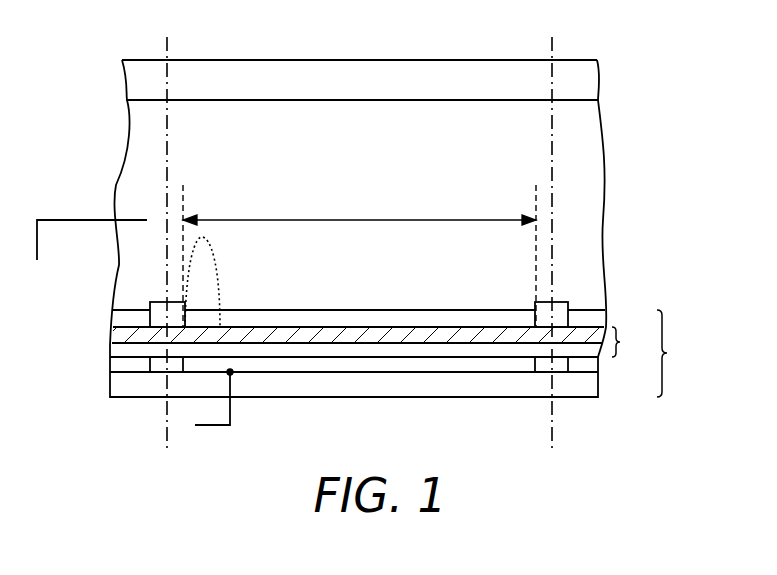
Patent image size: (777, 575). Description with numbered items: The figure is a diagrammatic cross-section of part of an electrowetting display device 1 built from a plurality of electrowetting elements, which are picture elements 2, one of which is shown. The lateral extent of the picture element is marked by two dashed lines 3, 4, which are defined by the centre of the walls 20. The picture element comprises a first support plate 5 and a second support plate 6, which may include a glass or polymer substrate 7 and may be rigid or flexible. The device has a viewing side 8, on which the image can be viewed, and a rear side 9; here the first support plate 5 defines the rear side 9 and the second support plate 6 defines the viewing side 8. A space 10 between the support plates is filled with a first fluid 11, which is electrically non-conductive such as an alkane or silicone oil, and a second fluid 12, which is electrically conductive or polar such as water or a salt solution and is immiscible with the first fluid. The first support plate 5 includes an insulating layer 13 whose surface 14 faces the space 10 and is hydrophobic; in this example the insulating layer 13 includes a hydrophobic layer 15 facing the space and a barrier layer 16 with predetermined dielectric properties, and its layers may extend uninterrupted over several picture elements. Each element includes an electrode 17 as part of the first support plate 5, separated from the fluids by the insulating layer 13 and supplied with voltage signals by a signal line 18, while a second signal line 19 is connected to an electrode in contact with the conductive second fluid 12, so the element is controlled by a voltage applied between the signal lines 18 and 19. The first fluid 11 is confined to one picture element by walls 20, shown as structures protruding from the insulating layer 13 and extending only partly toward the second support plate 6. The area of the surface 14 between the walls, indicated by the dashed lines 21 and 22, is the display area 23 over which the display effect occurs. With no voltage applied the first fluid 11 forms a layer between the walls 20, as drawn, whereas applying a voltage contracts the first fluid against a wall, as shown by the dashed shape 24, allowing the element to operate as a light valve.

The electrowetting display device 1 is at (671, 35).
The picture element 2 is at (340, 21).
The dashed line 3 is at (168, 43).
The dashed line 4 is at (553, 43).
The first support plate 5 is at (674, 353).
The second support plate 6 is at (498, 70).
The substrate 7 is at (578, 390).
The viewing side 8 is at (260, 60).
The rear side 9 is at (320, 398).
The space 10 is at (427, 127).
The first fluid 11 is at (488, 317).
The second fluid 12 is at (599, 192).
The insulating layer 13 is at (633, 342).
The surface 14 is at (422, 327).
The hydrophobic layer 15 is at (355, 335).
The barrier layer 16 is at (285, 347).
The electrode 17 is at (427, 362).
The signal line 18 is at (215, 425).
The second signal line 19 is at (58, 220).
The walls 20 is at (158, 315).
The dashed line 21 is at (185, 188).
The dashed line 22 is at (537, 188).
The display area 23 is at (359, 208).
The dashed shape 24 is at (190, 252).